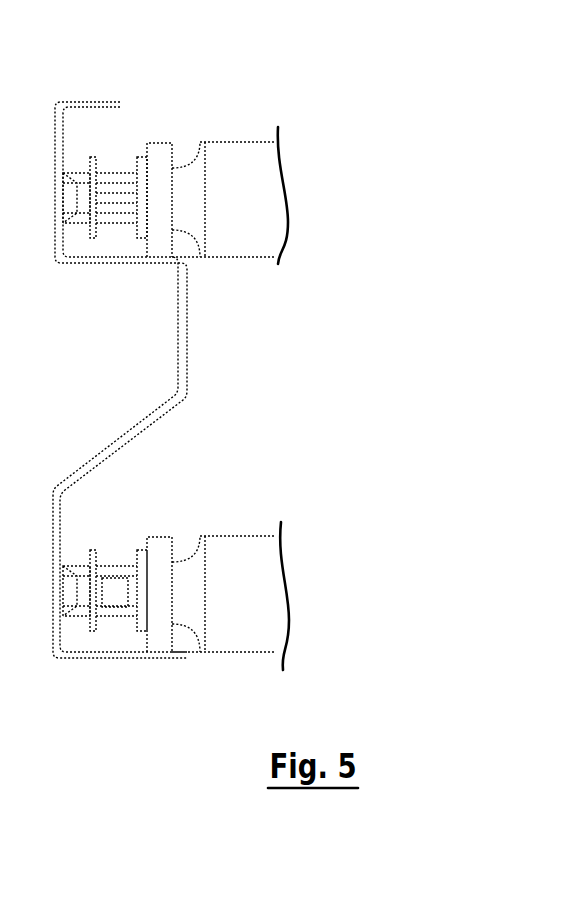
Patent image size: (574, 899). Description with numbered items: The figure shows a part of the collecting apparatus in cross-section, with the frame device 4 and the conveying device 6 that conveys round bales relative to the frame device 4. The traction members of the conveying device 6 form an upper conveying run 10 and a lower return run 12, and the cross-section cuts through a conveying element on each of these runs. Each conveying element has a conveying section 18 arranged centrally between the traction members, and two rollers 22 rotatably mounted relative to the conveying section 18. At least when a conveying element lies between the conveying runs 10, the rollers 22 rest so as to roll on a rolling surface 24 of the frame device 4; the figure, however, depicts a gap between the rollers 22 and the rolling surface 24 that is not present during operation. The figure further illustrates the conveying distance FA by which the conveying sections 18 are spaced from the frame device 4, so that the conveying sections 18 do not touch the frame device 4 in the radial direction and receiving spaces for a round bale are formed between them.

The frame device 4 is at (186, 350).
The conveying device 6 is at (278, 65).
The upper conveying run 10 is at (117, 198).
The lower return run 12 is at (122, 598).
The conveying section 18 is at (212, 125).
The rollers 22 is at (163, 170).
The rolling surface 24 is at (156, 257).
The conveying distance FA is at (177, 267).